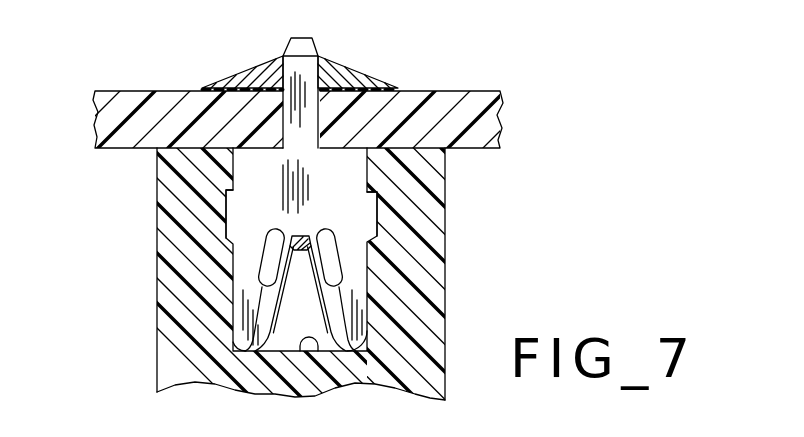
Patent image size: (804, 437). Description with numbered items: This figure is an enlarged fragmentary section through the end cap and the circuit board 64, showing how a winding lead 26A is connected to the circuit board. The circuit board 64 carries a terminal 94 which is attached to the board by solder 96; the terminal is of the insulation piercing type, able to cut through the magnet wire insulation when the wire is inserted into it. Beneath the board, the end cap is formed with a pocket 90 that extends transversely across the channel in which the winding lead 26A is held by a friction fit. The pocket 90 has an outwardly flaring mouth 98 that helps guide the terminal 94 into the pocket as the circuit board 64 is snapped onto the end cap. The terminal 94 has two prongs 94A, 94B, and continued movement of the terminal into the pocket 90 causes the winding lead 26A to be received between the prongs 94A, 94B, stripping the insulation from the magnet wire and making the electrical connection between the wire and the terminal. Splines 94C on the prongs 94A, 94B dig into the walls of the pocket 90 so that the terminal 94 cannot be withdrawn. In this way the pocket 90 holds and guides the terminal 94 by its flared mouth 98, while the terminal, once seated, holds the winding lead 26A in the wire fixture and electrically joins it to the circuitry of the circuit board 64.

The circuit board 64 is at (481, 85).
The outwardly flaring mouth 98 is at (370, 157).
The solder 96 is at (344, 66).
The terminal 94 is at (233, 250).
The splines 94C is at (226, 191).
The prong 94A is at (243, 353).
The prong 94B is at (350, 322).
The winding lead 26A is at (298, 240).
The pocket 90 is at (318, 351).